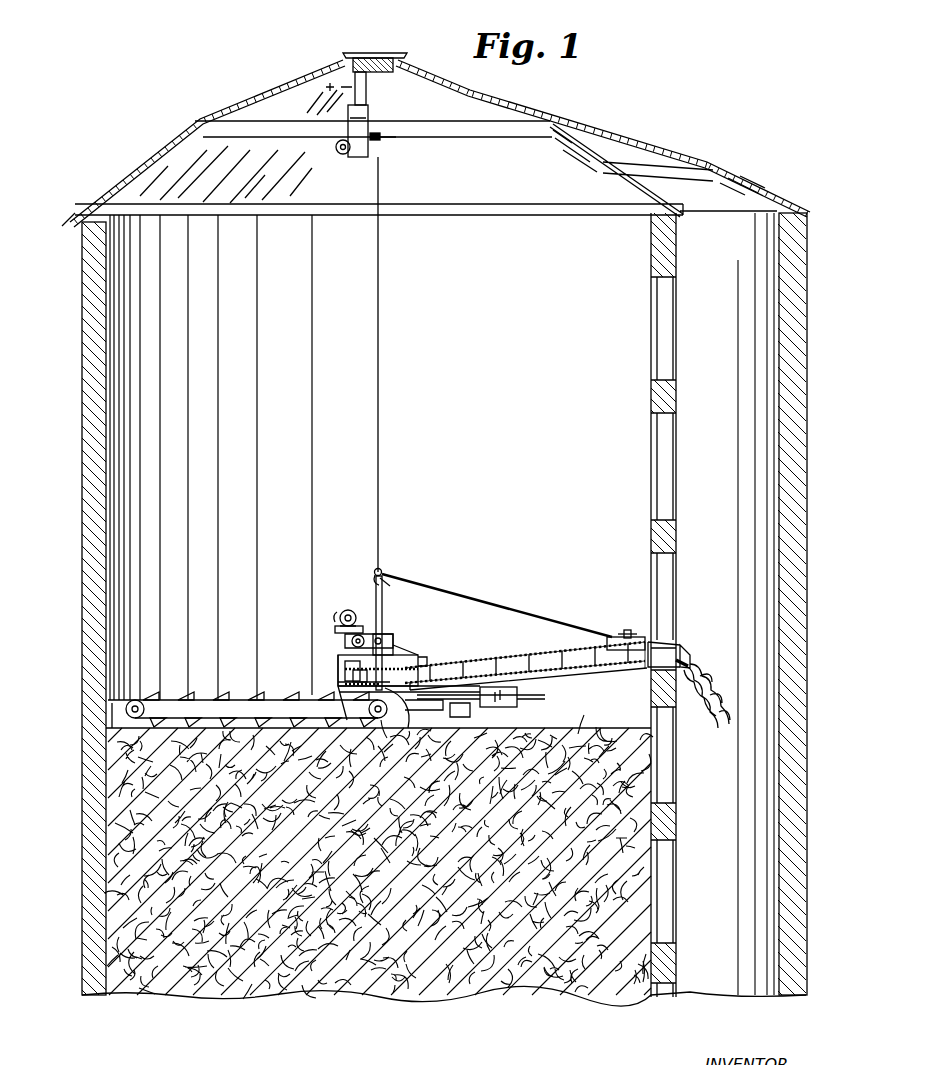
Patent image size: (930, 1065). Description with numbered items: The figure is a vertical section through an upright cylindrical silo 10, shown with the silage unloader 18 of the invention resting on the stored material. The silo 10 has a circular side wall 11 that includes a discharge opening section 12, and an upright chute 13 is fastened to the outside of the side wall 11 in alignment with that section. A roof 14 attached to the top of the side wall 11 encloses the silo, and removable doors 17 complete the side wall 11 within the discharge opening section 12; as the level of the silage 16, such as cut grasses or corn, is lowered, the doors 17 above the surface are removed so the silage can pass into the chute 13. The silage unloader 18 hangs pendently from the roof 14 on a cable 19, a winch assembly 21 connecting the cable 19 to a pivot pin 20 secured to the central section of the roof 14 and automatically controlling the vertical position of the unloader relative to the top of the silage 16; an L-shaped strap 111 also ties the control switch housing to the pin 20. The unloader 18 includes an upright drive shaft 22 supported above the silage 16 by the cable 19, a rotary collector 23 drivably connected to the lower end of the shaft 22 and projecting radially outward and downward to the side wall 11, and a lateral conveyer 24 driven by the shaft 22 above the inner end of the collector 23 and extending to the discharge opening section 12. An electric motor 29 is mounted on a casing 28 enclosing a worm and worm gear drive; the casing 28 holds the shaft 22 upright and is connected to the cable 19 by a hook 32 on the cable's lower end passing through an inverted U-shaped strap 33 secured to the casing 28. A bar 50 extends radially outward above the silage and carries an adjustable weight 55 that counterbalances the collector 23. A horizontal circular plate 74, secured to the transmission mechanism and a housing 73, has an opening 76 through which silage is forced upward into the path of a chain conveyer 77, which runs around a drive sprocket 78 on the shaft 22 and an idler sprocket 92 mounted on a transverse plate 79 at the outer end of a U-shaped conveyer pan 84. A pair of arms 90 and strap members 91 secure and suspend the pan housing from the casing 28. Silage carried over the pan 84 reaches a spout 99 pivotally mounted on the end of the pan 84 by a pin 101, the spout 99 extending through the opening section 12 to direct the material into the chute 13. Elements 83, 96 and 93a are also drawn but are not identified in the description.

The silo 10 is at (218, 93).
The side wall 11 is at (82, 388).
The discharge opening section 12 is at (673, 425).
The chute 13 is at (807, 338).
The roof 14 is at (525, 118).
The silage 16 is at (335, 985).
The doors 17 is at (668, 912).
The silage unloader 18 is at (320, 629).
The cable 19 is at (378, 352).
The pivot pin 20 is at (390, 62).
The winch assembly 21 is at (395, 147).
The drive shaft 22 is at (350, 658).
The rotary collector 23 is at (218, 688).
The lateral conveyer 24 is at (548, 680).
The casing 28 is at (365, 612).
The electric motor 29 is at (345, 612).
The hook 32 is at (390, 574).
The inverted U-shaped strap 33 is at (405, 588).
The bar 50 is at (535, 707).
The weight 55 is at (490, 707).
The housing 73 is at (432, 712).
The horizontal circular plate 74 is at (340, 688).
The opening 76 is at (420, 730).
The chain conveyer 77 is at (340, 670).
The drive sprocket 78 is at (385, 640).
The transverse plate 79 is at (627, 629).
The tension cable 83 is at (475, 600).
The conveyer pan 84 is at (550, 672).
The arms 90 is at (397, 655).
The strap members 91 is at (345, 642).
The idler sprocket 92 is at (650, 645).
The discharged silage 93a is at (707, 708).
The head box 96 is at (614, 637).
The spout 99 is at (684, 660).
The pin 101 is at (662, 656).
The L-shaped strap 111 is at (357, 68).